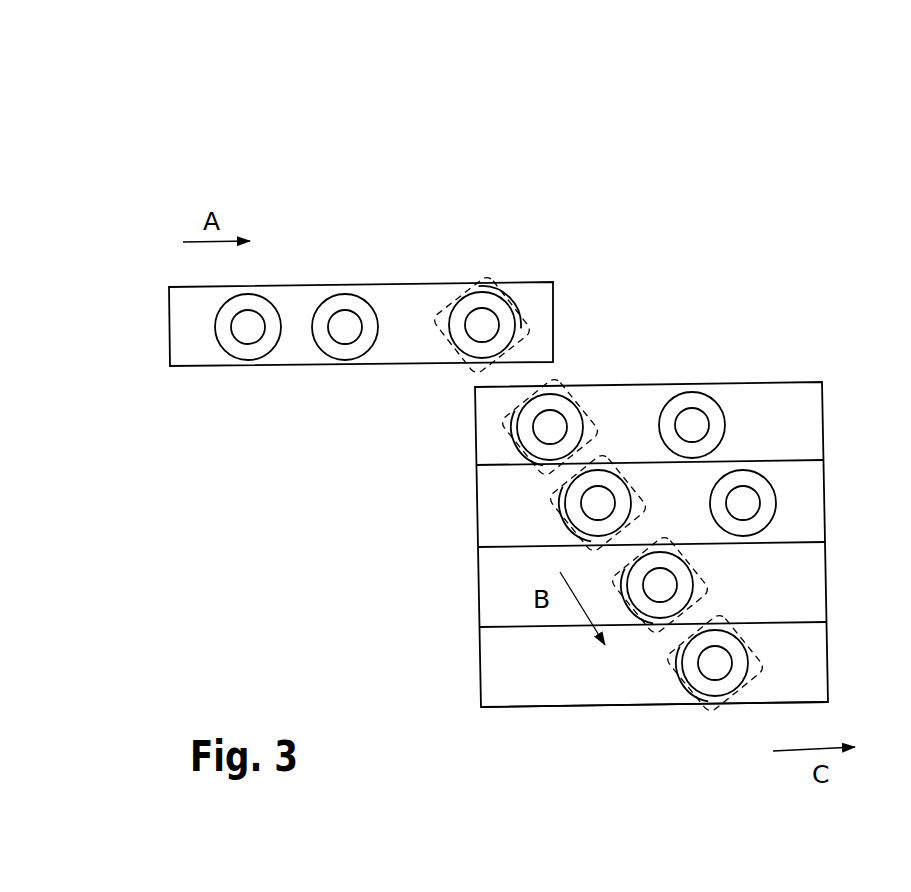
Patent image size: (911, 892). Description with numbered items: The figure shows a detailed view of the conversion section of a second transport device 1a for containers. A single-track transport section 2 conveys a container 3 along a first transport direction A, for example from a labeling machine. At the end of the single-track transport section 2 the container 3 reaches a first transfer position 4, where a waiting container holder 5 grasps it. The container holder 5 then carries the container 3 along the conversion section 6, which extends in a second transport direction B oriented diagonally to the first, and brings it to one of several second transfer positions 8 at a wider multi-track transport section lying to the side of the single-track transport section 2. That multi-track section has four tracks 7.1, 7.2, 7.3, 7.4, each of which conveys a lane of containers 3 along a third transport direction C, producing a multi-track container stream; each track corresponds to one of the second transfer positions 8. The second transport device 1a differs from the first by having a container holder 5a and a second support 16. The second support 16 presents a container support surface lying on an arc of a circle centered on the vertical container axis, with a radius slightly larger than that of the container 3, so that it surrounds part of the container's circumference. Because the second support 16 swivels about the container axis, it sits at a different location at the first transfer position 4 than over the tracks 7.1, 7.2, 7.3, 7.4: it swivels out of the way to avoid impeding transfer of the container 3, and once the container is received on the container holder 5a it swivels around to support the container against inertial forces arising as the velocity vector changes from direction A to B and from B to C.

The second transport device 1a is at (285, 215).
The single-track transport section 2 is at (418, 283).
The container 3 is at (343, 333).
The first transfer position 4 is at (433, 350).
The container holder 5 is at (903, 348).
The container holder 5a is at (517, 303).
The conversion section 6 is at (619, 432).
The track 7.1 is at (483, 435).
The track 7.2 is at (497, 503).
The track 7.3 is at (497, 582).
The track 7.4 is at (507, 663).
The second transfer position 8 is at (775, 665).
The second support 16 is at (500, 288).